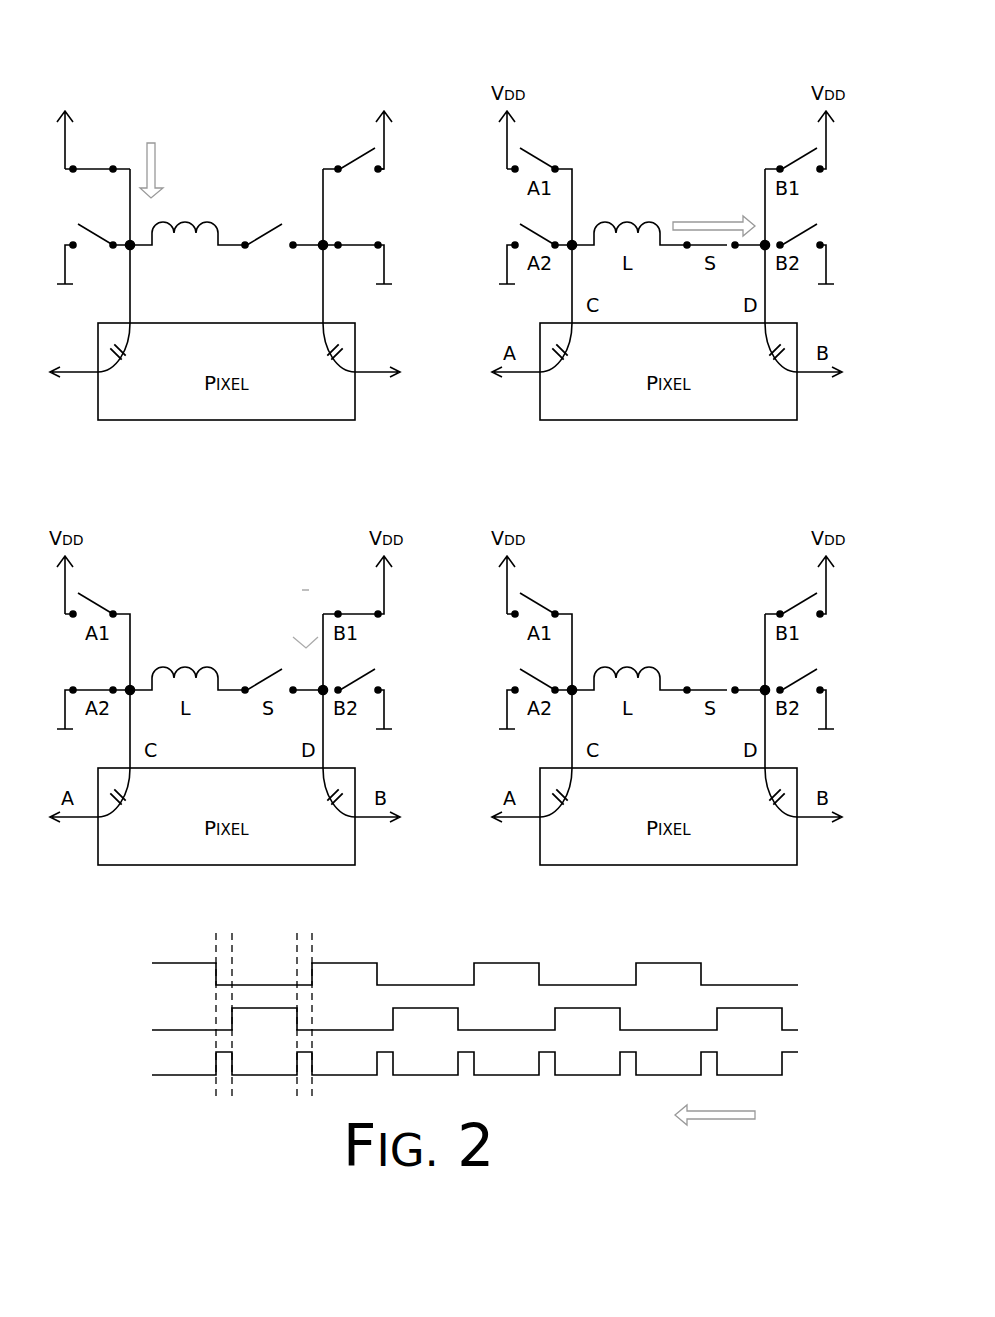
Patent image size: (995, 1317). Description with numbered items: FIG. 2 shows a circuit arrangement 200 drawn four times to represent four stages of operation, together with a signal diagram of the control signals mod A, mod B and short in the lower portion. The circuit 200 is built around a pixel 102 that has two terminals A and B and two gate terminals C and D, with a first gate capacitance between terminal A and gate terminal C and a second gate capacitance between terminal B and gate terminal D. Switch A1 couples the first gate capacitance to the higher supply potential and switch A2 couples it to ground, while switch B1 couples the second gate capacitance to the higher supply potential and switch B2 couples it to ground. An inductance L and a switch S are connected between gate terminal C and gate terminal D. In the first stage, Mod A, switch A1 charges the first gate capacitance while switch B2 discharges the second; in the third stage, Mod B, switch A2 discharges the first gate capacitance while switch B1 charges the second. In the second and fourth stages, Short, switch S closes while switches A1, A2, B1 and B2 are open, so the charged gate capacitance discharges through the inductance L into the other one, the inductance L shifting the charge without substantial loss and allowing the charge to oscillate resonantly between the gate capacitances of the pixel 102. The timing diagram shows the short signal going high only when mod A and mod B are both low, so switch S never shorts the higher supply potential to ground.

The circuit arrangement 200 is at (789, 40).
The pixel 102 is at (247, 416).
The switch A1 is at (100, 182).
The switch A2 is at (93, 254).
The switch B1 is at (353, 173).
The switch B2 is at (357, 263).
The inductance L is at (187, 248).
The switch S is at (282, 249).
The gate terminal C is at (142, 246).
The gate terminal D is at (314, 246).
The terminal A is at (74, 359).
The terminal B is at (377, 359).